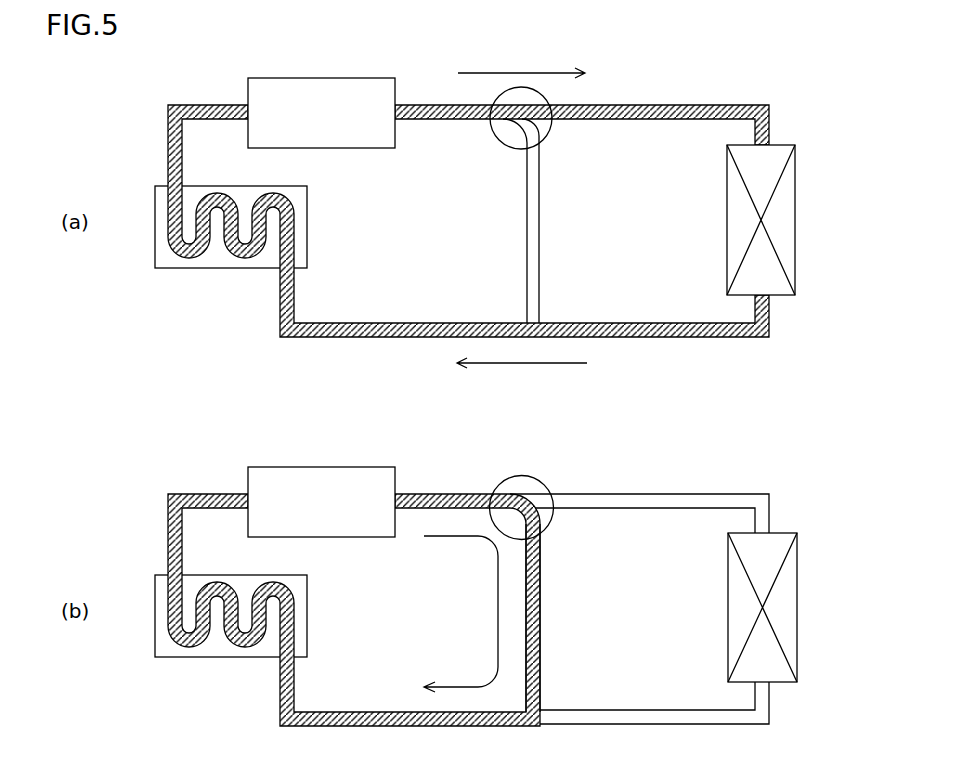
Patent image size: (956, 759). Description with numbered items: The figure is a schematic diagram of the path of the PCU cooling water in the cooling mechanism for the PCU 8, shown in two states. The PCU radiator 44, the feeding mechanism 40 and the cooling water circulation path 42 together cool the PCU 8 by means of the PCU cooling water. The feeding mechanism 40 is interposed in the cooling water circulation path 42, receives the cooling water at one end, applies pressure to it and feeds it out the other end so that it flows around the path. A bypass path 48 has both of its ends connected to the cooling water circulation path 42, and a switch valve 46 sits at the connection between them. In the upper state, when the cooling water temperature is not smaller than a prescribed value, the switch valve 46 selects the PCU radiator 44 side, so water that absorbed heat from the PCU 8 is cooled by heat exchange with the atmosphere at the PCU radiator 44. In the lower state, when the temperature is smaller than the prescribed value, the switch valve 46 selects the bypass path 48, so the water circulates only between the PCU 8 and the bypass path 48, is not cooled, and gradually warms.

The PCU 8 is at (307, 224).
The feeding mechanism 40 is at (347, 78).
The cooling water circulation path 42 is at (677, 104).
The PCU radiator 44 is at (795, 221).
The switch valve 46 is at (495, 140).
The bypass path 48 is at (532, 223).